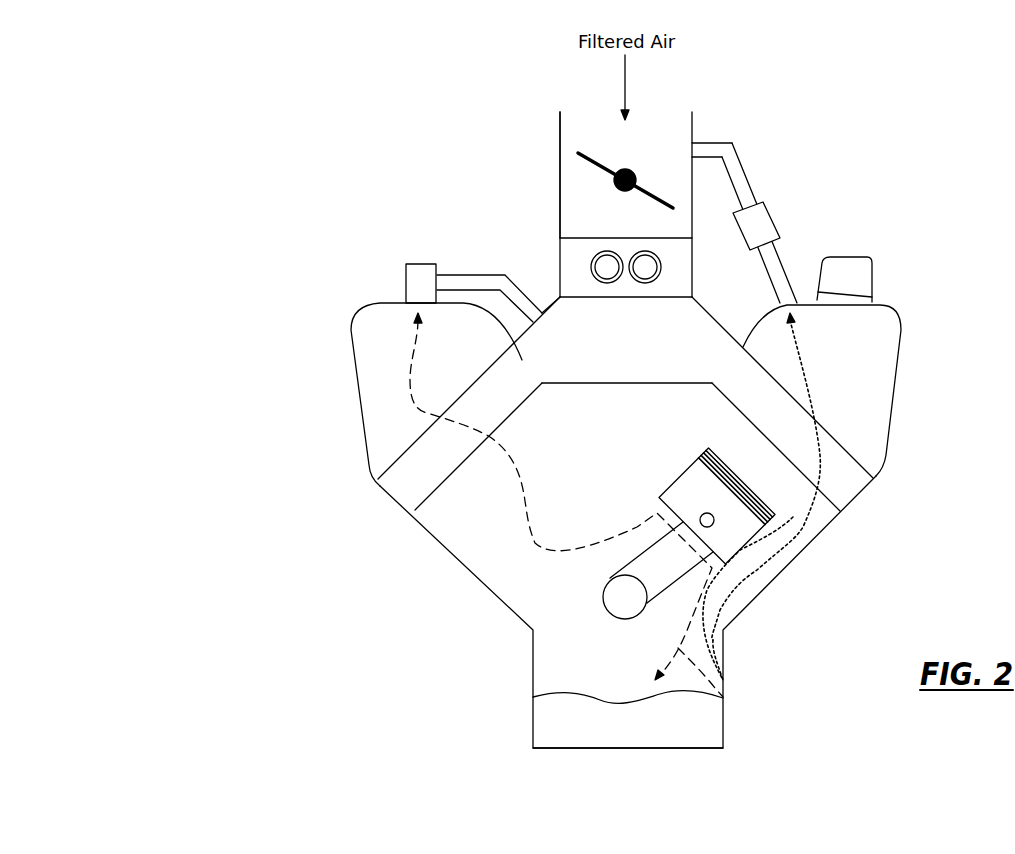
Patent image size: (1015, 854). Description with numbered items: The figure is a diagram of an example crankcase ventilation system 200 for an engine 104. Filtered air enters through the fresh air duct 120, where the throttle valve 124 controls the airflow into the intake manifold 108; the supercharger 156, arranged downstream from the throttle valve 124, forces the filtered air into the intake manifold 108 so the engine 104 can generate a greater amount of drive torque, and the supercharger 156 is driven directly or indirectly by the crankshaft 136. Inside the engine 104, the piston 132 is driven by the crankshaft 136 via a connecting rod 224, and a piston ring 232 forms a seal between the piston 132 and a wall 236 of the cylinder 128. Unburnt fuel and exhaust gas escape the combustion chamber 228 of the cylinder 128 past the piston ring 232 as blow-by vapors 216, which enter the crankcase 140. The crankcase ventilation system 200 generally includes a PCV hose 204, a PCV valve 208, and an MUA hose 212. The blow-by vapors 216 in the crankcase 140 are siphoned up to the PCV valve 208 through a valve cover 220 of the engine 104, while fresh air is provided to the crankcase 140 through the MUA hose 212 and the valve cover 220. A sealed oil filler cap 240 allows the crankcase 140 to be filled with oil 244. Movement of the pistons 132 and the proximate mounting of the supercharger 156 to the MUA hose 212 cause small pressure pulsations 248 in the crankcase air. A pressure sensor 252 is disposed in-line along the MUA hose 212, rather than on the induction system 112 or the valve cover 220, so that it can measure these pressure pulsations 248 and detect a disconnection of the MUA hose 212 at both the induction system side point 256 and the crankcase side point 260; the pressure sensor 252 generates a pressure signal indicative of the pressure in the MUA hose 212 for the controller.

The crankcase ventilation system 200 is at (294, 161).
The engine 104 is at (447, 568).
The intake manifold 108 is at (557, 303).
The induction system 112 is at (508, 93).
The fresh air duct 120 is at (560, 168).
The throttle valve 124 is at (592, 142).
The cylinder 128 is at (783, 440).
The piston 132 is at (690, 488).
The crankshaft 136 is at (625, 622).
The crankcase 140 is at (627, 750).
The supercharger 156 is at (695, 268).
The PCV hose 204 is at (468, 274).
The PCV valve 208 is at (406, 283).
The MUA hose 212 is at (745, 175).
The blow-by vapors 216 is at (518, 503).
The valve cover 220 is at (355, 400).
The connecting rod 224 is at (640, 556).
The combustion chamber 228 is at (708, 382).
The piston ring 232 is at (743, 455).
The wall 236 is at (657, 498).
The sealed oil filler cap 240 is at (852, 258).
The oil 244 is at (543, 715).
The pressure pulsations 248 is at (813, 540).
The pressure sensor 252 is at (777, 222).
The point 256 is at (698, 137).
The point 260 is at (797, 313).